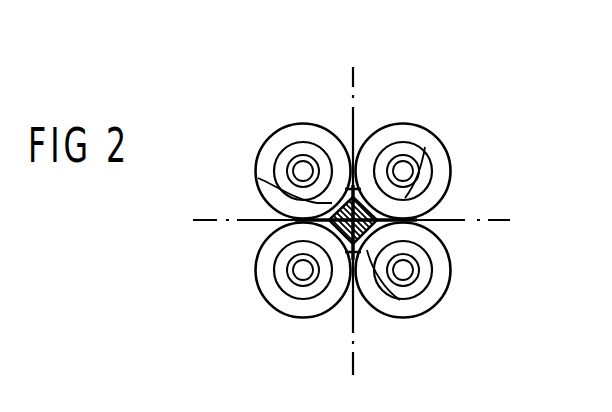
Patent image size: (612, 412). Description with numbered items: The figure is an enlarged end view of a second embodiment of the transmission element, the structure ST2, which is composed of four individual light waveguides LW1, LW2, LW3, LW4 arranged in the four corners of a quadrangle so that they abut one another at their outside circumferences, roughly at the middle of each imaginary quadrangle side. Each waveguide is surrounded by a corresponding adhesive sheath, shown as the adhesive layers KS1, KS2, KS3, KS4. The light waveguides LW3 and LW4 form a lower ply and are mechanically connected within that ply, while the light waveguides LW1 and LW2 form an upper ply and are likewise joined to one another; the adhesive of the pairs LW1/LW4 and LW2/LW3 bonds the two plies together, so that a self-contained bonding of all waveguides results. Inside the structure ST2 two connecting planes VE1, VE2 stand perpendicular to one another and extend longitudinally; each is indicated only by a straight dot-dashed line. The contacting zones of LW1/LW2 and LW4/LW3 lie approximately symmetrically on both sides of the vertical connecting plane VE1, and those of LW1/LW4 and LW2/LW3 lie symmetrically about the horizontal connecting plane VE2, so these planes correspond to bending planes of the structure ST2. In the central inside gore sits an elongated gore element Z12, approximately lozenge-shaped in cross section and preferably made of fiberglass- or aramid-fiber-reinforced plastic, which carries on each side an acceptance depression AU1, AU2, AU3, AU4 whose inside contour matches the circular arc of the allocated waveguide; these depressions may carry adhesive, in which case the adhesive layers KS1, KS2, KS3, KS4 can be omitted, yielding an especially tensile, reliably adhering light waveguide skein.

The light waveguide LW1 is at (282, 153).
The light waveguide LW2 is at (425, 147).
The light waveguide LW3 is at (430, 276).
The light waveguide LW4 is at (277, 278).
The adhesive layer KS1 is at (304, 130).
The adhesive layer KS2 is at (432, 160).
The adhesive layer KS3 is at (428, 302).
The adhesive layer KS4 is at (270, 272).
The acceptance depression AU1 is at (282, 175).
The acceptance depression AU2 is at (394, 153).
The acceptance depression AU3 is at (386, 296).
The acceptance depression AU4 is at (300, 290).
The vertically-extending connecting plane VE1 is at (354, 116).
The horizontally-extending connecting plane VE2 is at (245, 222).
The gore element Z12 is at (408, 199).
The structure ST2 is at (250, 335).